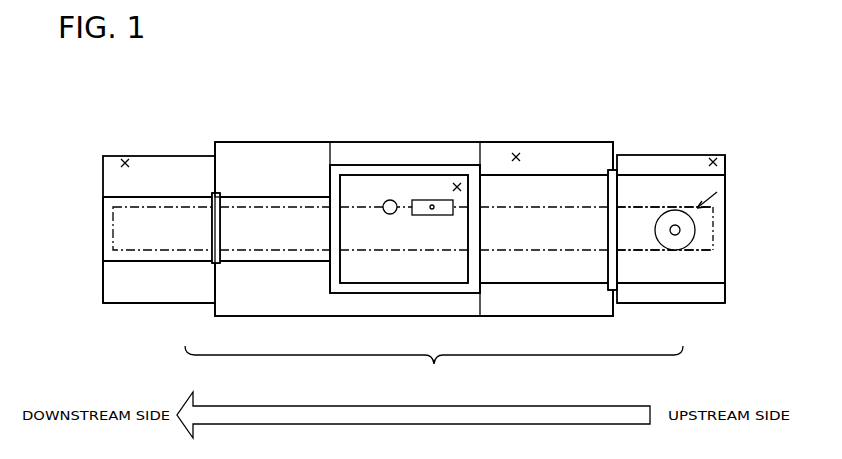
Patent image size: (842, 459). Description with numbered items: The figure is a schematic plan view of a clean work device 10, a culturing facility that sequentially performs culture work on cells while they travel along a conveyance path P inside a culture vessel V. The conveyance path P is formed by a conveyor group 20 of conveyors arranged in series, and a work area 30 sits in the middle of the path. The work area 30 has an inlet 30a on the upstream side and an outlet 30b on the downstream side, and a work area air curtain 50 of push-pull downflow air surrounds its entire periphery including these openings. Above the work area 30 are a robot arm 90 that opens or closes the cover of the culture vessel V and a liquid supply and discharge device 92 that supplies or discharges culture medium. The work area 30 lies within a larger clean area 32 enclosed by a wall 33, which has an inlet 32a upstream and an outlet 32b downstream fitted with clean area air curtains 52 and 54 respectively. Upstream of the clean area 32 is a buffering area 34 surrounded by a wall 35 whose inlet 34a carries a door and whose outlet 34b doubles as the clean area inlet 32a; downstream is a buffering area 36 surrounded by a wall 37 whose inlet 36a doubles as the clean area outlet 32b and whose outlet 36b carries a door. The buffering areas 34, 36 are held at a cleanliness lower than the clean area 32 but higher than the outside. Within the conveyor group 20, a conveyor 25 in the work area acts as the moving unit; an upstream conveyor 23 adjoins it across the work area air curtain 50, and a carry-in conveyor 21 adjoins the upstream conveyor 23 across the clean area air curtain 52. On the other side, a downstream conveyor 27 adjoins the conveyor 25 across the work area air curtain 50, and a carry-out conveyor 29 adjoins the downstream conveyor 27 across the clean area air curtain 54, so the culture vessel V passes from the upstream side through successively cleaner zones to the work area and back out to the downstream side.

The clean work device 10 is at (686, 90).
The conveyor group 20 is at (434, 367).
The carry-in conveyor 21 is at (635, 260).
The upstream conveyor 23 is at (525, 260).
The conveyor 25 is at (420, 258).
The downstream conveyor 27 is at (257, 255).
The carry-out conveyor 29 is at (155, 255).
The work area 30 is at (458, 186).
The inlet 30a is at (472, 212).
The outlet 30b is at (335, 203).
The clean area 32 is at (518, 158).
The inlet 32a is at (612, 228).
The outlet 32b is at (195, 170).
The wall 33 is at (270, 141).
The buffering area 34 is at (714, 162).
The inlet 34a is at (725, 250).
The outlet 34b is at (624, 194).
The wall 35 is at (690, 303).
The buffering area 36 is at (124, 162).
The inlet 36a is at (218, 216).
The outlet 36b is at (103, 222).
The wall 37 is at (140, 303).
The work area air curtain 50 is at (367, 171).
The clean area air curtain 52 is at (614, 173).
The clean area air curtain 54 is at (215, 194).
The robot arm 90 is at (435, 200).
The liquid supply and discharge device 92 is at (391, 200).
The conveyance path P is at (728, 190).
The culture vessel V is at (694, 226).